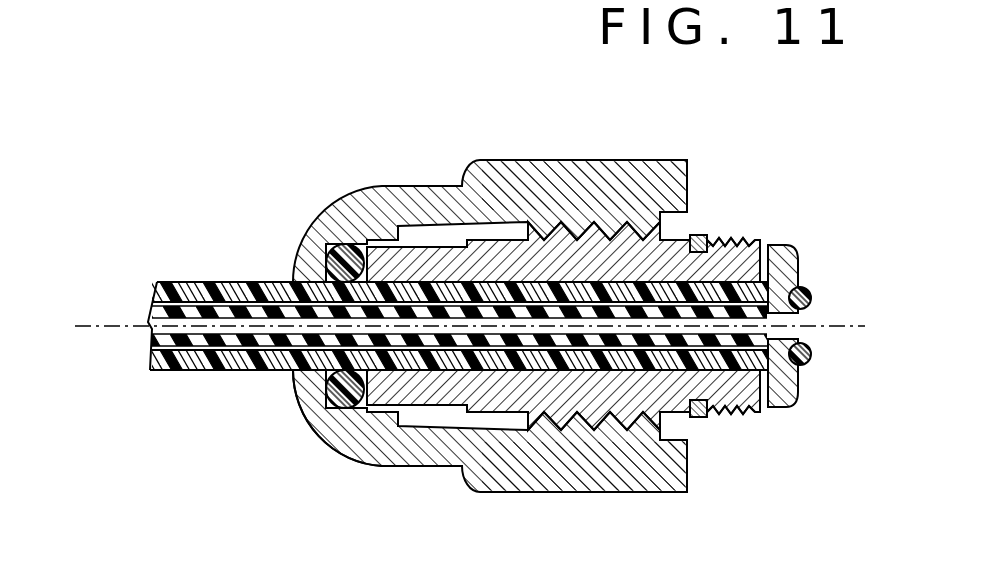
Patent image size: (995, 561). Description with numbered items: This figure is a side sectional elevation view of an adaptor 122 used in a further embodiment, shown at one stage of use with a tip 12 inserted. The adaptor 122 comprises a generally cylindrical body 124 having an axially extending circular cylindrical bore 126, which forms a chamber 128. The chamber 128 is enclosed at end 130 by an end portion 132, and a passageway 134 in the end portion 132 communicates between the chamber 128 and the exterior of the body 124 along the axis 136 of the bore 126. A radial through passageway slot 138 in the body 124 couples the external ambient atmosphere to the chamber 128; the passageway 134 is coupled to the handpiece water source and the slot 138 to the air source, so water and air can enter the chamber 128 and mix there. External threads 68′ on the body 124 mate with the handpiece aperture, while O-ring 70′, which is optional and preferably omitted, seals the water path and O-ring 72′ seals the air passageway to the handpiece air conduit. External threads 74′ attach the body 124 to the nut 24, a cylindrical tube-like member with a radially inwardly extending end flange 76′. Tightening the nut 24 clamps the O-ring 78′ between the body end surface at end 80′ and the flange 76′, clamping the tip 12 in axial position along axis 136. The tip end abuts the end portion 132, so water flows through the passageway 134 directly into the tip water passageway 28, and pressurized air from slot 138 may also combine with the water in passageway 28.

The tip 12 is at (180, 372).
The nut 24 is at (396, 185).
The water passageway 28 is at (150, 325).
The external threads 68′ is at (721, 238).
The O-ring 70′ is at (812, 303).
The O-ring 72′ is at (712, 418).
The external threads 74′ is at (543, 160).
The end flange 76′ is at (300, 252).
The O-ring 78′ is at (340, 400).
The end 80′ is at (378, 470).
The adaptor 122 is at (557, 295).
The body 124 is at (752, 240).
The bore 126 is at (300, 375).
The chamber 128 is at (635, 280).
The end 130 is at (796, 265).
The end portion 132 is at (778, 365).
The passageway 134 is at (800, 326).
The axis 136 is at (105, 325).
The passageway slot 138 is at (764, 250).